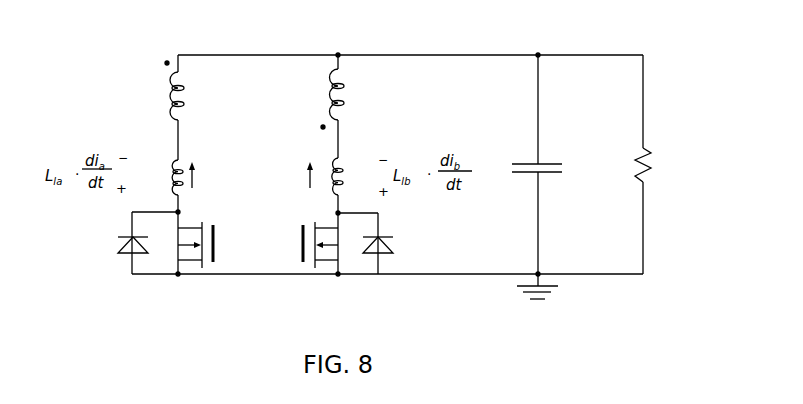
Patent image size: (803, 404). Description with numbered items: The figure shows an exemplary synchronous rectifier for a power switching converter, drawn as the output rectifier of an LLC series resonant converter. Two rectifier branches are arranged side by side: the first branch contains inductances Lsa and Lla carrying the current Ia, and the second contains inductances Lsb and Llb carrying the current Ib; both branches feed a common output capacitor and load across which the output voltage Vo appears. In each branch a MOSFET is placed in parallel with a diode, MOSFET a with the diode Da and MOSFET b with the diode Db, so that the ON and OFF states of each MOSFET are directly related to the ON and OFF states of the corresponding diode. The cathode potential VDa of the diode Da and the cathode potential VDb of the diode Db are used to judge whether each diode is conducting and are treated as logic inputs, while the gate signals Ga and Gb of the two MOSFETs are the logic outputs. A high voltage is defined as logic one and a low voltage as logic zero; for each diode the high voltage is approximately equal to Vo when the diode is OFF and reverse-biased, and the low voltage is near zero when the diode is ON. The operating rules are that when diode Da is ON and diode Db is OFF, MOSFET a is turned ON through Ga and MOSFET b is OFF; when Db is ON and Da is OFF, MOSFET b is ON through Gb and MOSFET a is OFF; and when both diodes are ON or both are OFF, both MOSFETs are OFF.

The series inductor a Lsa is at (189, 90).
The series inductor b Lsb is at (347, 99).
The leakage inductor a Lla is at (155, 177).
The leakage inductor b Llb is at (349, 176).
The current a Ia is at (201, 178).
The current b Ib is at (300, 178).
The diode a Da is at (148, 233).
The diode b Db is at (365, 233).
The cathode potential of diode a VDa is at (93, 246).
The cathode potential of diode b VDb is at (411, 246).
The gate signal of MOSFET a Ga is at (207, 245).
The gate signal of MOSFET b Gb is at (305, 245).
The output voltage Vo is at (547, 177).